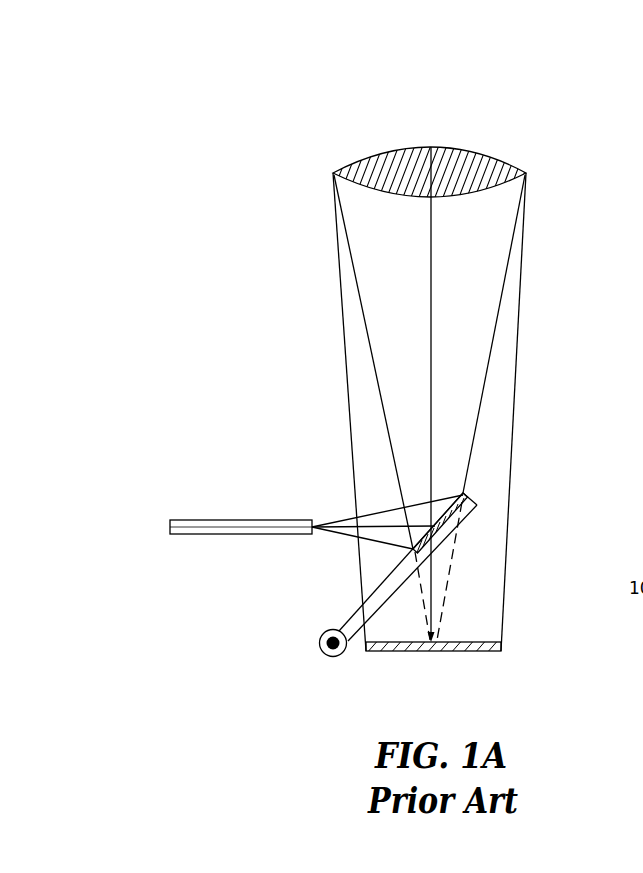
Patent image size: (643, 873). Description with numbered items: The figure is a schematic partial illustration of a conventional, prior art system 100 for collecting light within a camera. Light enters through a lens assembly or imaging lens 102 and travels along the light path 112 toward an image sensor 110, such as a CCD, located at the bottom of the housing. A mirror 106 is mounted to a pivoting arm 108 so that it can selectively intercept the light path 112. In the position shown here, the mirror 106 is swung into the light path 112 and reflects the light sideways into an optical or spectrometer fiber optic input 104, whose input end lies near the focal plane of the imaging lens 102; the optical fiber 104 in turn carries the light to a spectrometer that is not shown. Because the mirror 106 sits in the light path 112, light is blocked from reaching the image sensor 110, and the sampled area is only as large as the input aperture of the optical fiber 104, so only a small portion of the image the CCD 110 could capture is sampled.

The conventional system 100 is at (535, 122).
The imaging lens 102 is at (391, 204).
The spectrometer fiber optic input 104 is at (183, 533).
The mirror 106 is at (403, 553).
The pivoting arm 108 is at (378, 597).
The image sensor 110 is at (467, 650).
The light path 112 is at (442, 280).